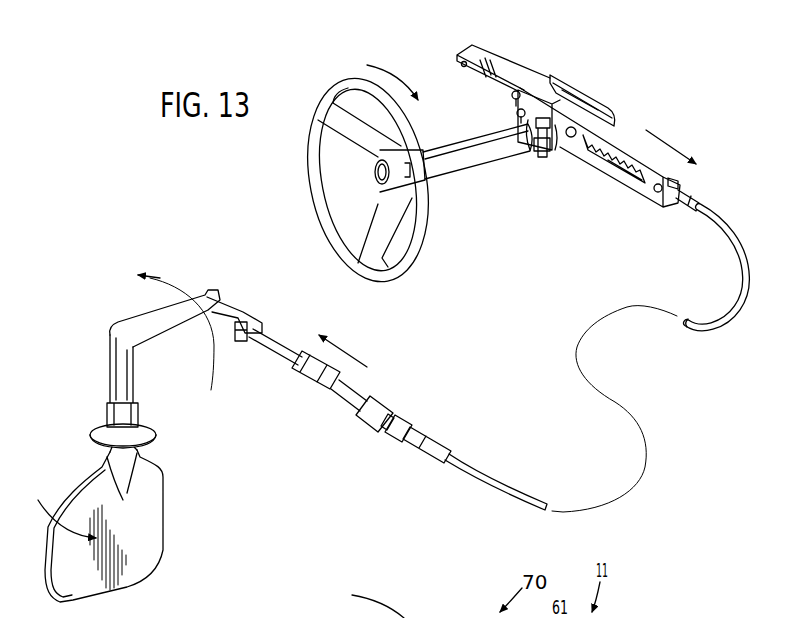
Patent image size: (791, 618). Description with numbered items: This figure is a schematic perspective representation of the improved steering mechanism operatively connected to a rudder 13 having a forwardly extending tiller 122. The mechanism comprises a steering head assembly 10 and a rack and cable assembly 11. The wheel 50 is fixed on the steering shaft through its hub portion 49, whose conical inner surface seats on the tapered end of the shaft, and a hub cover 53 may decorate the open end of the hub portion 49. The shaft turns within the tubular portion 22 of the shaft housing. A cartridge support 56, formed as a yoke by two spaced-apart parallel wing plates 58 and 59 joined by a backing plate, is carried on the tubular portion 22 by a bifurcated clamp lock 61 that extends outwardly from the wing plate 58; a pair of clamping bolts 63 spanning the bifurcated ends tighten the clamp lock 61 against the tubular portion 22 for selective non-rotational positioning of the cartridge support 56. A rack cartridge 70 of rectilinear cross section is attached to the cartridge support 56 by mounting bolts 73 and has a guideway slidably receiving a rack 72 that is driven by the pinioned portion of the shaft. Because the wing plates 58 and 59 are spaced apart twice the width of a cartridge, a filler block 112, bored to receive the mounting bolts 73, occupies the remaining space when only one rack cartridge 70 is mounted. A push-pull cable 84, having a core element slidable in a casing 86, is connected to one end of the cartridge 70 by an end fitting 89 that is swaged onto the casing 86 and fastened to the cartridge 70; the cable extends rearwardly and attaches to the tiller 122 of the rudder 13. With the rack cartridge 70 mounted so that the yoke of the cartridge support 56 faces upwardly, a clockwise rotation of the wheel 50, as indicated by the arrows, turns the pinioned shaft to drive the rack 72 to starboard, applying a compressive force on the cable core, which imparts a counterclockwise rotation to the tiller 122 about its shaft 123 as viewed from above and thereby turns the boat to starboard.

The steering head assembly 10 is at (282, 183).
The rack and cable assembly 11 is at (585, 52).
The rudder 13 is at (164, 517).
The tubular portion 22 is at (509, 152).
The hub portion 49 is at (378, 194).
The wheel 50 is at (423, 234).
The hub cover 53 is at (376, 173).
The cartridge support 56 is at (596, 92).
The wing plate 58 is at (534, 95).
The wing plate 59 is at (611, 110).
The clamp lock 61 is at (542, 160).
The clamping bolts 63 is at (511, 103).
The rack cartridge 70 is at (506, 62).
The rack 72 is at (609, 165).
The mounting bolts 73 is at (571, 138).
The push-pull cable 84 is at (706, 334).
The casing 86 is at (738, 254).
The end fitting 89 is at (702, 191).
The filler block 112 is at (589, 88).
The tiller 122 is at (155, 307).
The shaft 123 is at (135, 380).